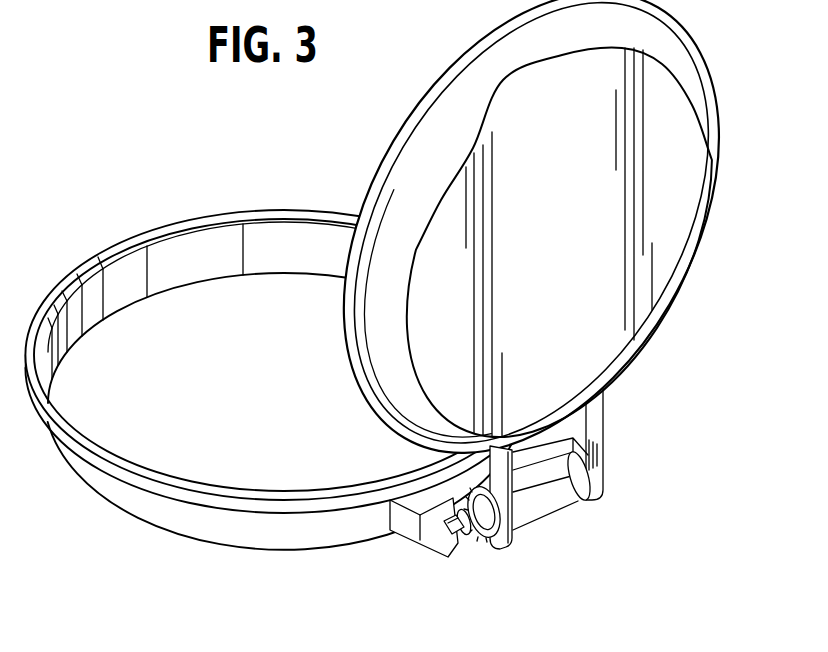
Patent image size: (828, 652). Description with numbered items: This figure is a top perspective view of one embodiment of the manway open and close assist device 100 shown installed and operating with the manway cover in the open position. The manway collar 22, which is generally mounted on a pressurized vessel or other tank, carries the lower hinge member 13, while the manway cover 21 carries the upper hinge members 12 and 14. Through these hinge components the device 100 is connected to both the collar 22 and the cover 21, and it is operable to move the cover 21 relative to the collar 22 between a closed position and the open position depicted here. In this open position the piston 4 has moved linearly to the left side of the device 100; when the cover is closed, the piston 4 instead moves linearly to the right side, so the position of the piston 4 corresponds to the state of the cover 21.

The manway open and close assist device 100 is at (410, 309).
The manway cover 21 is at (670, 307).
The manway collar 22 is at (217, 547).
The upper hinge member 14 is at (593, 426).
The upper hinge member 12 is at (498, 472).
The piston 4 is at (513, 523).
The lower hinge member 13 is at (433, 533).